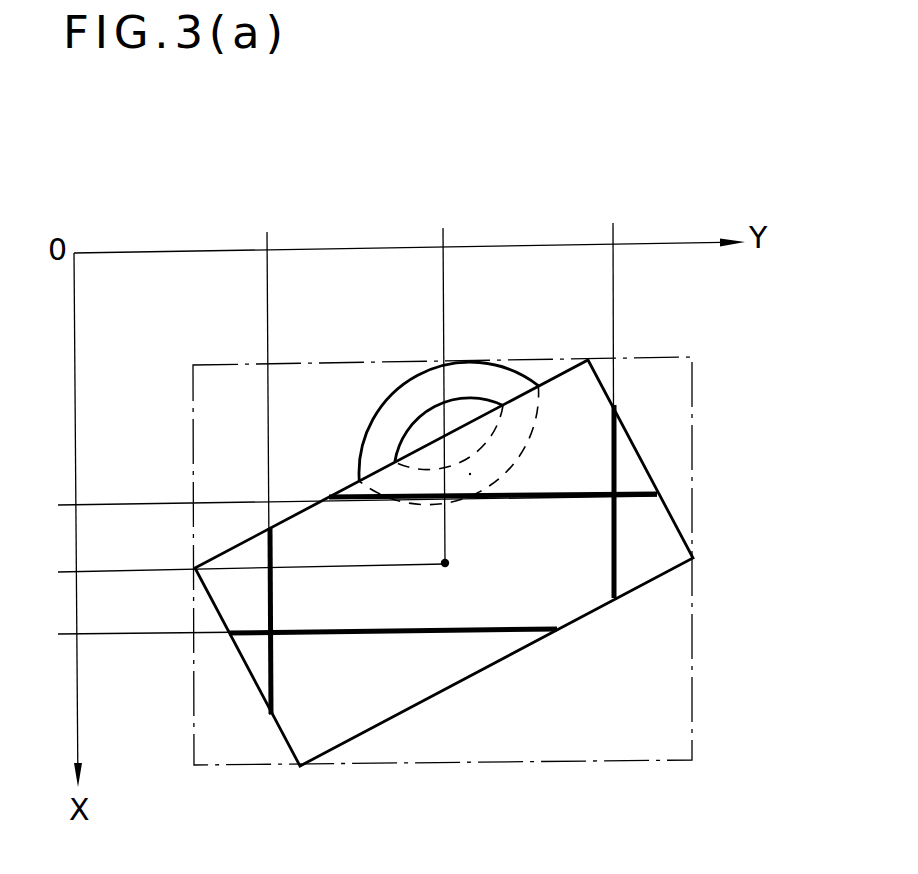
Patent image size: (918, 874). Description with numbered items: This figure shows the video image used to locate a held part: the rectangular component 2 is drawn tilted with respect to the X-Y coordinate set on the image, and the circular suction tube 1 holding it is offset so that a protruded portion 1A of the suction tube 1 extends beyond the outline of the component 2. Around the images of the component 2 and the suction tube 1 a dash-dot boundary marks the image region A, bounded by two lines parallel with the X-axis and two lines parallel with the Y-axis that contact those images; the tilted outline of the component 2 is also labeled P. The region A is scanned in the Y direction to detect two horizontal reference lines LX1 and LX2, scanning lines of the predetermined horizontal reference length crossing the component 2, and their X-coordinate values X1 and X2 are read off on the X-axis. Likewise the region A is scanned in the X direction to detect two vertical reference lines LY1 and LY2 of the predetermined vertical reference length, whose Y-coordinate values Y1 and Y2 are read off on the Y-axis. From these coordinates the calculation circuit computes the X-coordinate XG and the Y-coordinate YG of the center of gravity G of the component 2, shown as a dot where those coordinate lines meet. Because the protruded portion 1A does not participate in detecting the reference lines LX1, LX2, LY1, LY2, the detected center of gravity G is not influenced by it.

The suction tube 1 is at (365, 405).
The protruded portion of the suction tube 1A is at (460, 378).
The component 2 is at (493, 647).
The rotated rectangular pattern P is at (464, 602).
The image region A is at (473, 561).
The center of gravity of the component G is at (445, 567).
The horizontal reference line LX1 is at (350, 630).
The horizontal reference line LX2 is at (600, 490).
The vertical reference line LY1 is at (270, 662).
The vertical reference line LY2 is at (617, 552).
The X-coordinate value of horizontal reference line LX1 X1 is at (338, 509).
The X-coordinate of the center of gravity XG is at (232, 573).
The X-coordinate value of horizontal reference line LX2 X2 is at (287, 637).
The Y-coordinate value of vertical reference line LY1 Y1 is at (265, 453).
The Y-coordinate of the center of gravity YG is at (443, 375).
The Y-coordinate value of vertical reference line LY2 Y2 is at (607, 391).